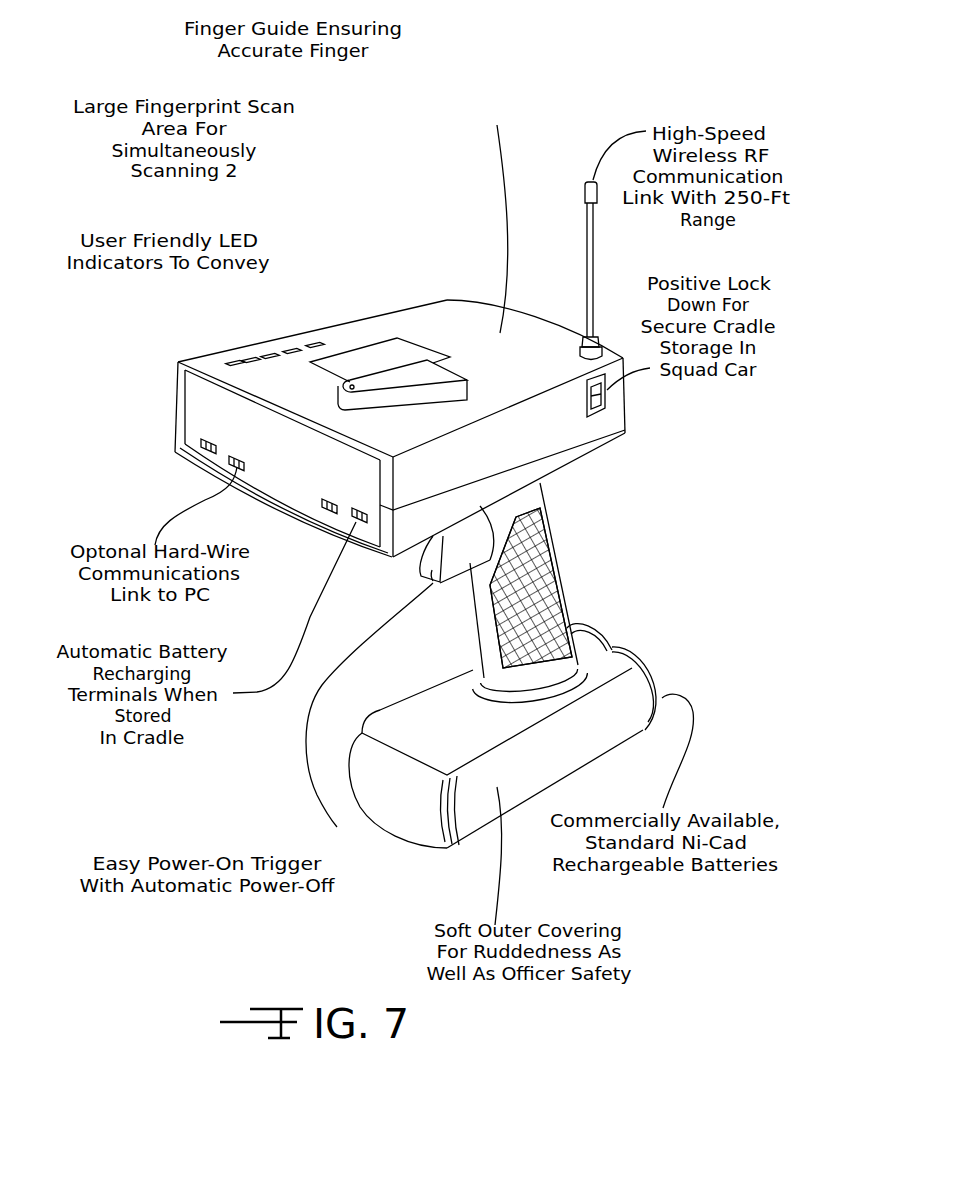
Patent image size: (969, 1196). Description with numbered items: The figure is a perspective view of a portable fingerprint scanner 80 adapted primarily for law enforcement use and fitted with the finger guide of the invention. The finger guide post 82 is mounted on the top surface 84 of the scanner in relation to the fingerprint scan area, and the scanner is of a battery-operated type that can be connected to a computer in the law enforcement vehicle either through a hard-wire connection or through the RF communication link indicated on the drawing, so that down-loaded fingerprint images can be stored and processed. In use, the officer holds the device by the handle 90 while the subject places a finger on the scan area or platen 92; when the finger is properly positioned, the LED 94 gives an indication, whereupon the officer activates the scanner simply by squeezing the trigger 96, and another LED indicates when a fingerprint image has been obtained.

The portable fingerprint scanner 80 is at (592, 492).
The finger guide post 82 is at (415, 372).
The top surface 84 is at (504, 193).
The handle 90 is at (555, 567).
The scan area or platen 92 is at (372, 340).
The LED 94 is at (273, 350).
The trigger 96 is at (337, 827).